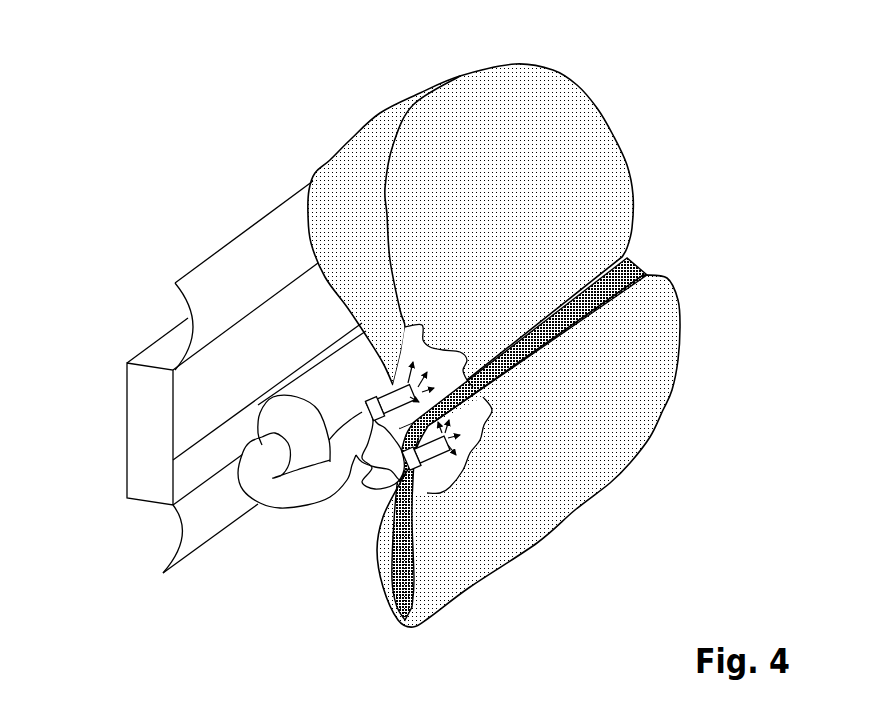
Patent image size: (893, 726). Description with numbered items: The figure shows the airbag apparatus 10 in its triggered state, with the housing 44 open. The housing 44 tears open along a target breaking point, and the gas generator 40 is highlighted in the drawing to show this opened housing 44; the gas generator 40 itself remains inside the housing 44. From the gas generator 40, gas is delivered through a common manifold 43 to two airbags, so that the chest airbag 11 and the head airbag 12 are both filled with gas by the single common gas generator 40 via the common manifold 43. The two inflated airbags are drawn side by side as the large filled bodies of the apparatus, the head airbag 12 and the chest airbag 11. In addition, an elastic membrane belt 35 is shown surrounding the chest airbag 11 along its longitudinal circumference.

The airbag apparatus 10 is at (633, 93).
The chest airbag 11 is at (547, 487).
The head airbag 12 is at (587, 190).
The elastic membrane belt 35 is at (400, 605).
The gas generator 40 is at (326, 392).
The manifold 43 is at (357, 475).
The housing 44 is at (150, 414).